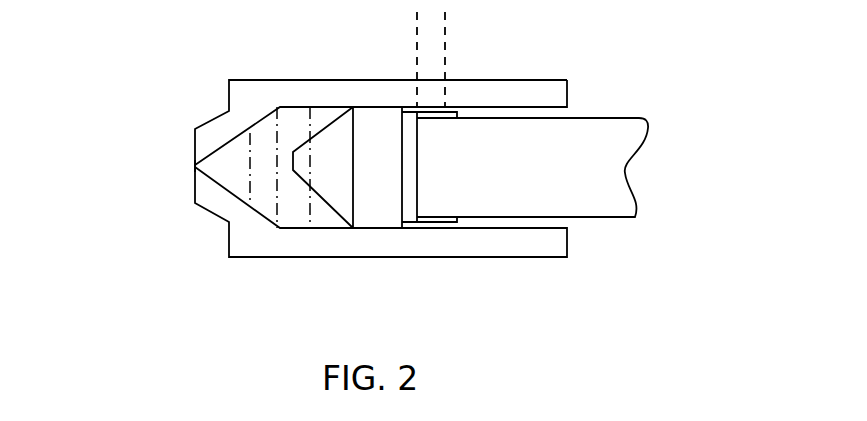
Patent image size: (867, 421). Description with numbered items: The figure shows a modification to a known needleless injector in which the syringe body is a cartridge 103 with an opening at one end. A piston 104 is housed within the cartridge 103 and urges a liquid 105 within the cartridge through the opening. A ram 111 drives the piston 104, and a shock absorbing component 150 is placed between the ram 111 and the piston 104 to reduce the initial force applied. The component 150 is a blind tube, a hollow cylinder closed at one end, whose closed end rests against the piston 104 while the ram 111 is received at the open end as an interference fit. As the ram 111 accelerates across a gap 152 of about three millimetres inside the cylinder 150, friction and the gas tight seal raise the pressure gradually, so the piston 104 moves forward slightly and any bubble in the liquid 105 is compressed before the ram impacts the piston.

The cartridge 103 is at (310, 246).
The piston 104 is at (387, 203).
The liquid 105 is at (237, 172).
The ram 111 is at (620, 207).
The shock absorbing component 150 is at (438, 223).
The gap 152 is at (377, 32).